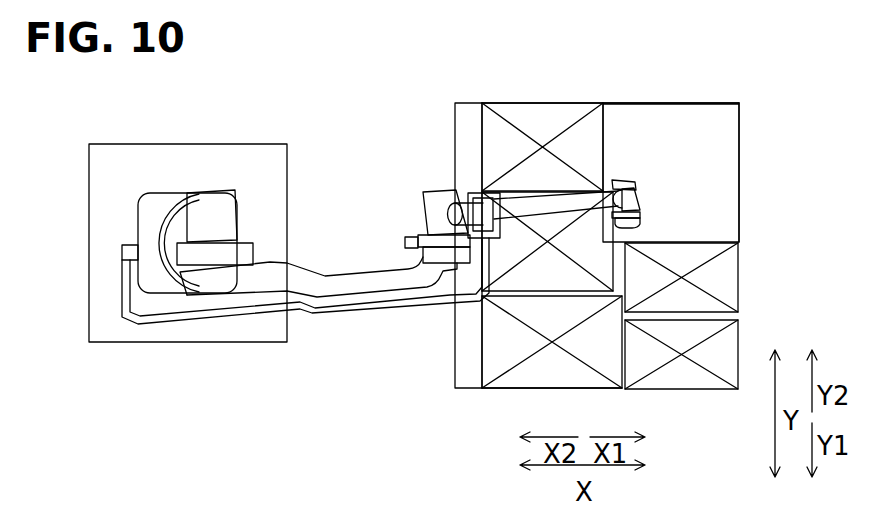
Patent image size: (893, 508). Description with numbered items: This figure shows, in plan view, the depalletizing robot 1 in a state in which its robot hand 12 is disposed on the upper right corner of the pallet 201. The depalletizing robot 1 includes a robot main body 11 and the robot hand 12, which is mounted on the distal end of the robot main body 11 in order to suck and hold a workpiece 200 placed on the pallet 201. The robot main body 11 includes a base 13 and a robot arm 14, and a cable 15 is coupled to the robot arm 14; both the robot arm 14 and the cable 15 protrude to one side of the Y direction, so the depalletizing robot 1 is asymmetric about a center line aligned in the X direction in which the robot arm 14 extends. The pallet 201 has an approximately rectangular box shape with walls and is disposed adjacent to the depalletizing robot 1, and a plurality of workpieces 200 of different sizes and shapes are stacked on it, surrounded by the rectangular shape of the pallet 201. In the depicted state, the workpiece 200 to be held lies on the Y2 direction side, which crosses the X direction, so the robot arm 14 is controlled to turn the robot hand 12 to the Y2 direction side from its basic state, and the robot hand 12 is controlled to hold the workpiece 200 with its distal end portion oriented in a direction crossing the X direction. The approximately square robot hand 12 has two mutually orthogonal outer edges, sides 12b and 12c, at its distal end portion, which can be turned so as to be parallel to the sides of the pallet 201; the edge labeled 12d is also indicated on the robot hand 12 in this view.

The depalletizing robot 1 is at (350, 133).
The robot main body 11 is at (438, 207).
The robot hand 12 is at (622, 118).
The side of robot hand 12b is at (687, 102).
The side of robot hand 12c is at (740, 147).
The housing top wall 12d is at (740, 102).
The base 13 is at (178, 143).
The robot arm 14 is at (352, 280).
The cable 15 is at (390, 307).
The workpiece 200 is at (722, 283).
The pallet 201 is at (510, 102).